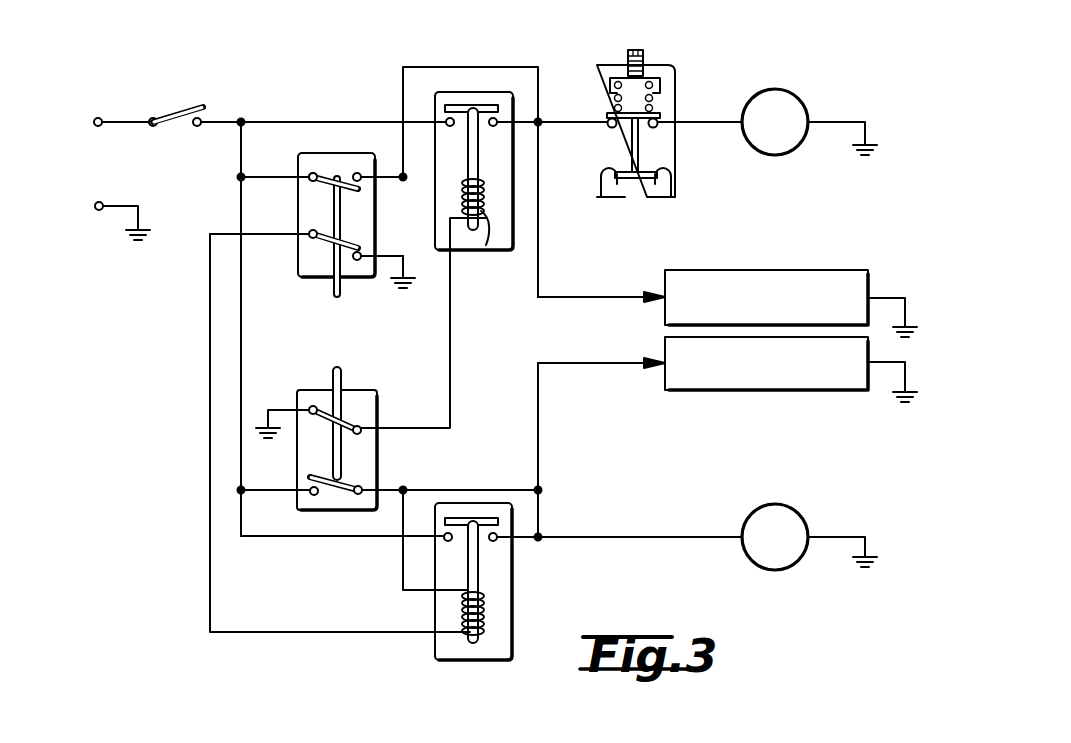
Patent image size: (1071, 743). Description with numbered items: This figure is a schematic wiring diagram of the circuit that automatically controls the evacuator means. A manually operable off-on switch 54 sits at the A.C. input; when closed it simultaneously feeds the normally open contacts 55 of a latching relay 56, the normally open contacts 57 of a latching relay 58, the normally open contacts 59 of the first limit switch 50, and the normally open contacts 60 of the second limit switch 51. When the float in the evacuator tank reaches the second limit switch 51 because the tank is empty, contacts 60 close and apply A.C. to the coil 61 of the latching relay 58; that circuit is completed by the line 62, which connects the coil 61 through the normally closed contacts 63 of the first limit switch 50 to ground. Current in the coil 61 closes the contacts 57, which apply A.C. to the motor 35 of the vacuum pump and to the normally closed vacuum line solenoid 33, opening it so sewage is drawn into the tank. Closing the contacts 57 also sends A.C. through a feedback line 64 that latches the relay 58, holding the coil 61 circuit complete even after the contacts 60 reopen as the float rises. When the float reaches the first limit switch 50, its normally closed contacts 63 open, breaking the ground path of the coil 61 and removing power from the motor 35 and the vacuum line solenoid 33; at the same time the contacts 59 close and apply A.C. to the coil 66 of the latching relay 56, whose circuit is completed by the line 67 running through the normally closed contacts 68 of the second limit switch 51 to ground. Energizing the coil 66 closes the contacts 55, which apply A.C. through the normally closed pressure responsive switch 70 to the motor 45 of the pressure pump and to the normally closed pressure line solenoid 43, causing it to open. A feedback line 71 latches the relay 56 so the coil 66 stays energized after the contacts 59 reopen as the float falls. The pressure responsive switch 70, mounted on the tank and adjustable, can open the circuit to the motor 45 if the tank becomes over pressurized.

The off-on switch 54 is at (175, 103).
The first limit switch 50 is at (328, 153).
The normally open contacts of the first limit switch 59 is at (338, 170).
The normally closed contacts of the first limit switch 63 is at (327, 245).
The feedback line 71 is at (520, 63).
The latching relay 56 is at (452, 90).
The normally open contacts of latching relay 56 55 is at (460, 125).
The coil of latching relay 56 66 is at (486, 245).
The line 67 is at (452, 338).
The pressure responsive switch 70 is at (675, 157).
The motor of the pressure pump 45 is at (800, 98).
The pressure line solenoid 43 is at (850, 252).
The vacuum line solenoid 33 is at (803, 390).
The second limit switch 51 is at (353, 390).
The normally closed contacts of the second limit switch 68 is at (352, 418).
The normally open contacts of the second limit switch 60 is at (330, 493).
The feedback line 64 is at (507, 470).
The latching relay 58 is at (513, 570).
The normally open contacts of latching relay 58 57 is at (462, 538).
The coil of latching relay 58 61 is at (482, 617).
The line 62 is at (290, 630).
The motor of the vacuum pump 35 is at (800, 510).